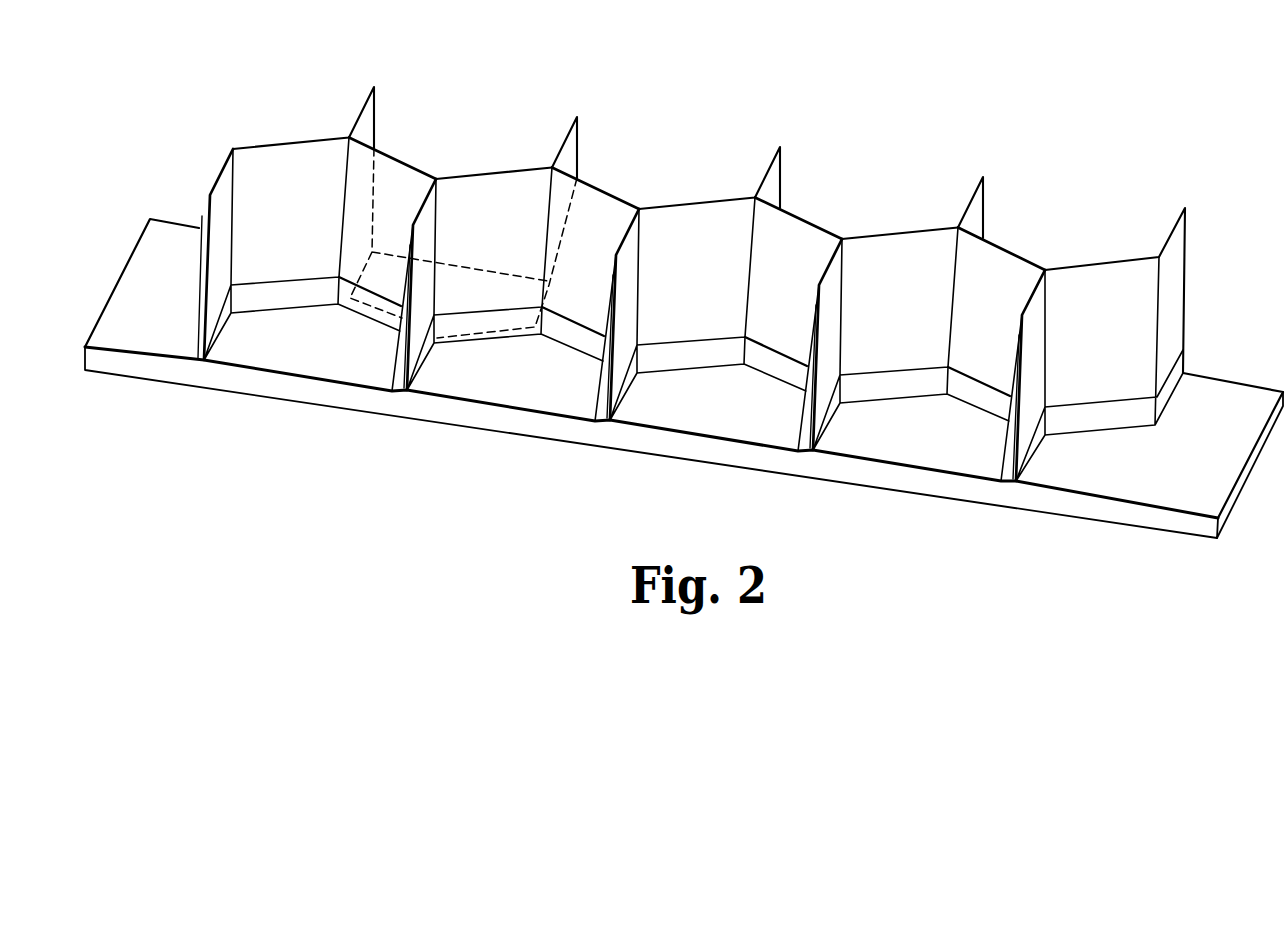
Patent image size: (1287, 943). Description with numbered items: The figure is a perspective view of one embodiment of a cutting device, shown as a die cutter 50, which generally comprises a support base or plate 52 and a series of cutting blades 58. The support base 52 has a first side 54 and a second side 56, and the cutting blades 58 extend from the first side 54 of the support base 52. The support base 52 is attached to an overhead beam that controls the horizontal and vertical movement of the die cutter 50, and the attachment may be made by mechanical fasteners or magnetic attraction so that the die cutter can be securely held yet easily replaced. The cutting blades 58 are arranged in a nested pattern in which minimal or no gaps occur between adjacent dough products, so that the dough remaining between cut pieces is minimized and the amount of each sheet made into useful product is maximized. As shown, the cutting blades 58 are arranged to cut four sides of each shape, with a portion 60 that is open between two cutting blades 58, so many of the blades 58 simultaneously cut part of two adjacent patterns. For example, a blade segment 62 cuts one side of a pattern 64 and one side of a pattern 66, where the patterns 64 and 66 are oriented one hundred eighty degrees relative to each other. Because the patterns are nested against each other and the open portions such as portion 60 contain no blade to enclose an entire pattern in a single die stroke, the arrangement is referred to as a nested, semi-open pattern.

The die cutter 50 is at (939, 128).
The support base 52 is at (1113, 485).
The first side 54 is at (1225, 400).
The second side 56 is at (973, 505).
The cutting blades 58 is at (983, 217).
The portion 60 is at (490, 382).
The blade segment 62 is at (497, 185).
The pattern 64 is at (535, 347).
The pattern 66 is at (387, 268).